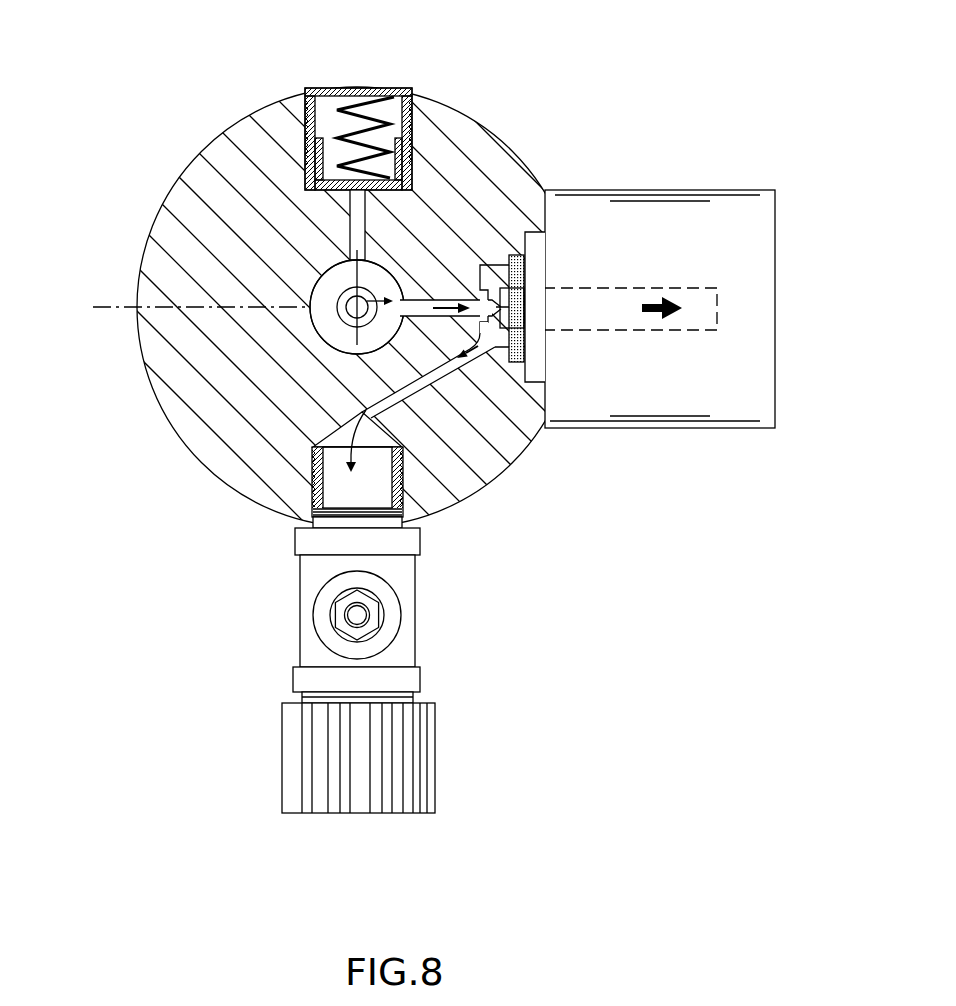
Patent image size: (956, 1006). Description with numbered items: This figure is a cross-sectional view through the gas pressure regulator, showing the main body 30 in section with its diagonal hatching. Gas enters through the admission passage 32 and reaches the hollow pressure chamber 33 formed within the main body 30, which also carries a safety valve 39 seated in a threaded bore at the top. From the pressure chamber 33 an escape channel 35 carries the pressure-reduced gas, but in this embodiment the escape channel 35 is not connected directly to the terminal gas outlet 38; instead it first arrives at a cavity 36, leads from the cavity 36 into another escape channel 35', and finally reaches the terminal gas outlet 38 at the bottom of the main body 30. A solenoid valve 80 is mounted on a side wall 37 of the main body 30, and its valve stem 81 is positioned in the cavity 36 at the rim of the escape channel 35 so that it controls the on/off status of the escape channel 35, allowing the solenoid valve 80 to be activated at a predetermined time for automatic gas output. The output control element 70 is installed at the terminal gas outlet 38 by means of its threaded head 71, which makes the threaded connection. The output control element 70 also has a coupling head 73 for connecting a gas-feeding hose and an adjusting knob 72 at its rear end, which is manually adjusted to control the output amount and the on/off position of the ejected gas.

The main body 30 is at (190, 165).
The admission passage 32 is at (323, 276).
The hollow pressure chamber 33 is at (380, 282).
The escape channel 35 is at (450, 423).
The another escape channel 35' is at (450, 434).
The cavity 36 is at (495, 280).
The side wall 37 is at (547, 215).
The terminal gas outlet 38 is at (327, 435).
The safety valve 39 is at (388, 76).
The output control element 70 is at (291, 670).
The threaded head 71 is at (310, 478).
The adjusting knob 72 is at (305, 775).
The coupling head 73 is at (307, 615).
The solenoid valve 80 is at (702, 190).
The valve stem 81 is at (528, 332).